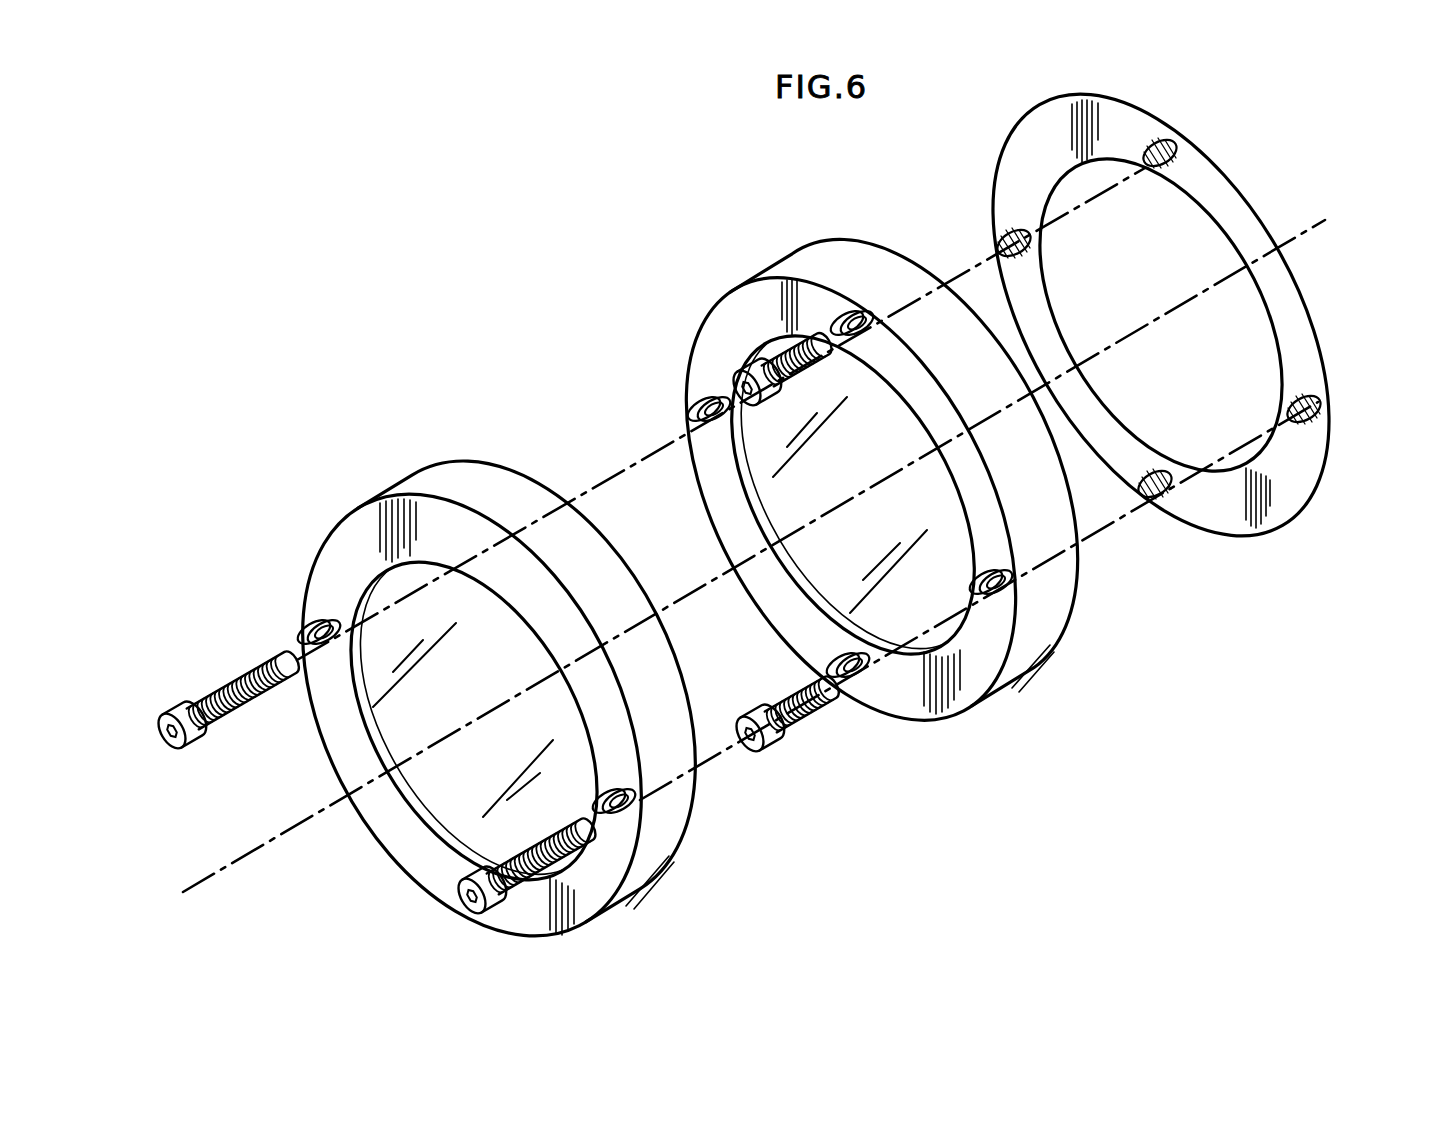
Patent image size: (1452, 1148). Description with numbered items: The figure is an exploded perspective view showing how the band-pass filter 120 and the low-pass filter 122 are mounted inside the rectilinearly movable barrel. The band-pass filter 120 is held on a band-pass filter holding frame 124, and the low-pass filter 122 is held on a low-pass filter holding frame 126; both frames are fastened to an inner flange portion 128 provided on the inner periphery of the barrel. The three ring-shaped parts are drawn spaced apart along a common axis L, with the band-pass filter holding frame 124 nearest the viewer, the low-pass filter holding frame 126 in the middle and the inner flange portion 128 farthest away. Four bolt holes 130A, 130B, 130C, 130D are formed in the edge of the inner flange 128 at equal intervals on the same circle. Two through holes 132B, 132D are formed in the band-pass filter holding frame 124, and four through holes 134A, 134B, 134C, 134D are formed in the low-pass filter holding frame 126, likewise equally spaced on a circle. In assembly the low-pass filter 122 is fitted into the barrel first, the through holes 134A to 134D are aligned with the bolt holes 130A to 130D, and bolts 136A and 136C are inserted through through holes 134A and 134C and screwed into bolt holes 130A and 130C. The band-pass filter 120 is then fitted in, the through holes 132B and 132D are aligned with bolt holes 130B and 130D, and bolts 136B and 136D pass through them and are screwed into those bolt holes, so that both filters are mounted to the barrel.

The band-pass filter 120 is at (396, 750).
The low-pass filter 122 is at (770, 508).
The band-pass filter holding frame 124 is at (322, 553).
The low-pass filter holding frame 126 is at (725, 312).
The inner flange portion 128 is at (1026, 146).
The bolt hole 130A is at (1166, 138).
The bolt hole 130B is at (1320, 411).
The bolt hole 130C is at (1162, 500).
The bolt hole 130D is at (1004, 232).
The through hole 132B is at (636, 814).
The through hole 132D is at (300, 630).
The through hole 134A is at (842, 305).
The through hole 134B is at (1012, 590).
The through hole 134C is at (855, 690).
The through hole 134D is at (690, 407).
The bolt 136A is at (778, 350).
The bolt 136B is at (605, 868).
The bolt 136C is at (790, 724).
The bolt 136D is at (185, 708).
The optical axis L is at (1322, 222).